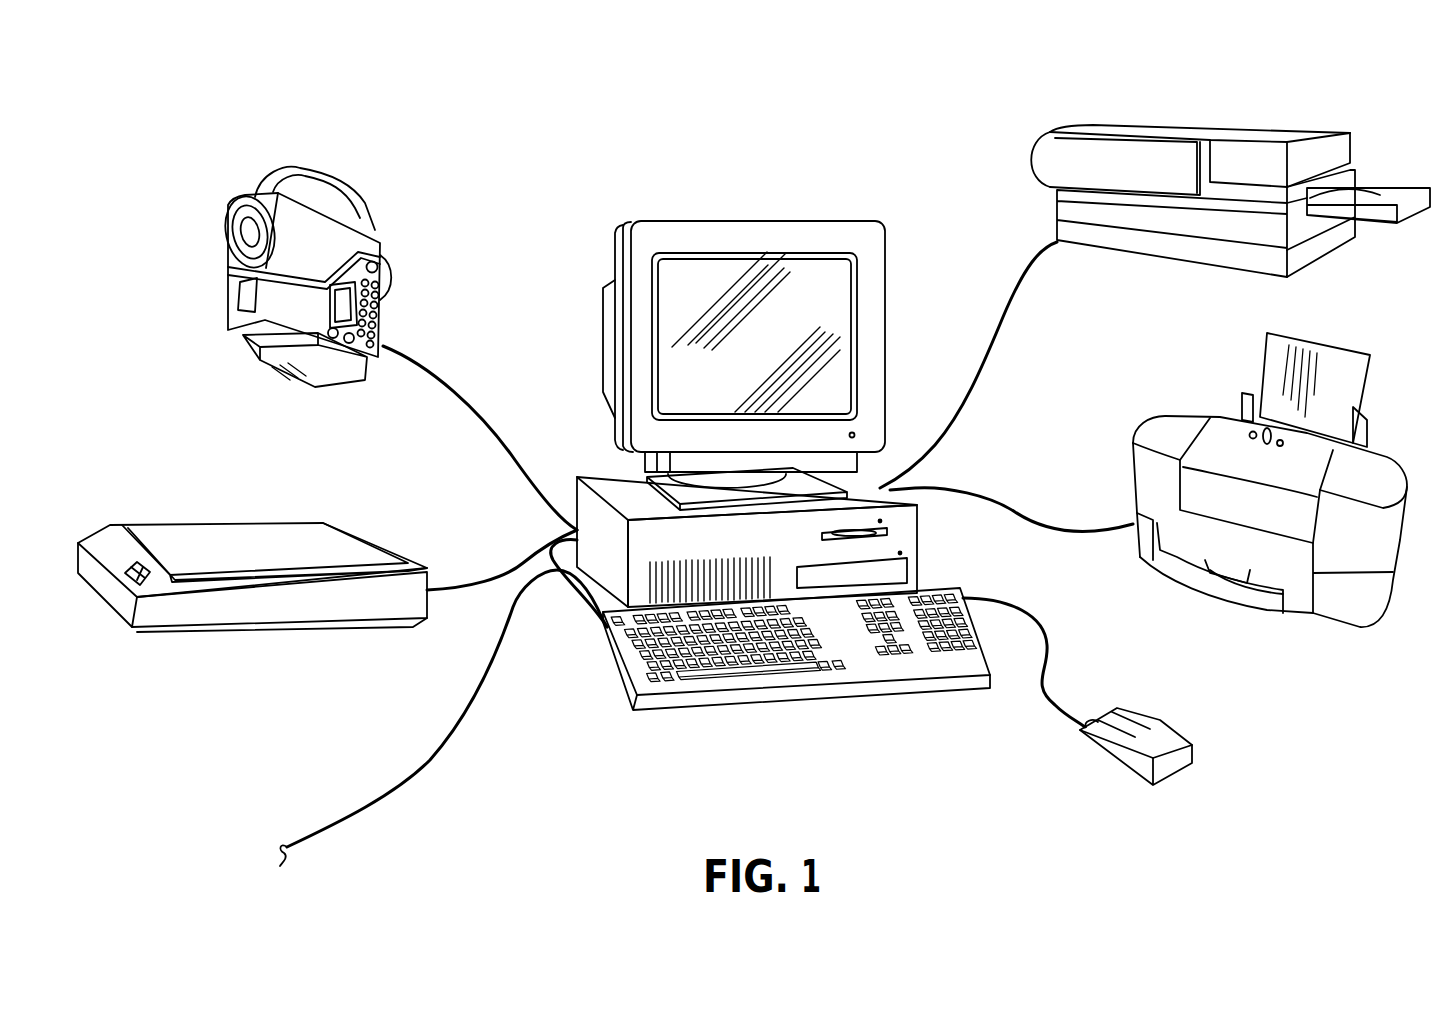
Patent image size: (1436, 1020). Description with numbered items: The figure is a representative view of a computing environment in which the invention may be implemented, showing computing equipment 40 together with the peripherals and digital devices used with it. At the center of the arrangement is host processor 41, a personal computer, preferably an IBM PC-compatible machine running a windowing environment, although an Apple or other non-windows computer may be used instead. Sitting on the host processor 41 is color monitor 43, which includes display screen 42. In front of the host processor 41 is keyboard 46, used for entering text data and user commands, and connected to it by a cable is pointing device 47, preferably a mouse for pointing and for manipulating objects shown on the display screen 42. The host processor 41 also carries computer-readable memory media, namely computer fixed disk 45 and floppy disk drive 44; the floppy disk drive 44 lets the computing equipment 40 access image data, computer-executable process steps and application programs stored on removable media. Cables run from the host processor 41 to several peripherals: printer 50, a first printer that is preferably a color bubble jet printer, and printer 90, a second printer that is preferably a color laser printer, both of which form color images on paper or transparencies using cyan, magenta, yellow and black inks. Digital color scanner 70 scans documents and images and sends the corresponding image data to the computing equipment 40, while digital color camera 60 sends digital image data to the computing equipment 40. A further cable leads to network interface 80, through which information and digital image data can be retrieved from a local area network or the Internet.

The computing equipment 40 is at (858, 182).
The host processor 41 is at (597, 470).
The display screen 42 is at (835, 303).
The color monitor 43 is at (750, 222).
The floppy disk drive 44 is at (887, 532).
The computer fixed disk 45 is at (900, 570).
The keyboard 46 is at (725, 690).
The pointing device 47 is at (1170, 770).
The printer 50 is at (1218, 408).
The digital color camera 60 is at (385, 252).
The digital color scanner 70 is at (307, 623).
The network interface 80 is at (340, 876).
The printer 90 is at (1118, 119).